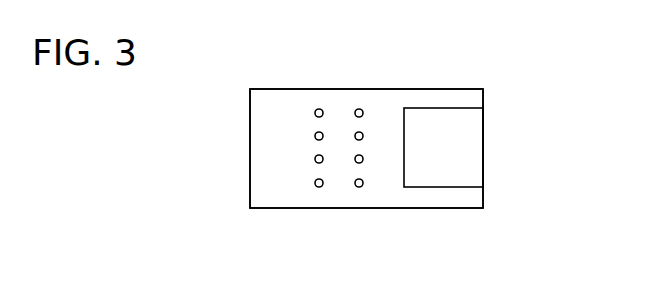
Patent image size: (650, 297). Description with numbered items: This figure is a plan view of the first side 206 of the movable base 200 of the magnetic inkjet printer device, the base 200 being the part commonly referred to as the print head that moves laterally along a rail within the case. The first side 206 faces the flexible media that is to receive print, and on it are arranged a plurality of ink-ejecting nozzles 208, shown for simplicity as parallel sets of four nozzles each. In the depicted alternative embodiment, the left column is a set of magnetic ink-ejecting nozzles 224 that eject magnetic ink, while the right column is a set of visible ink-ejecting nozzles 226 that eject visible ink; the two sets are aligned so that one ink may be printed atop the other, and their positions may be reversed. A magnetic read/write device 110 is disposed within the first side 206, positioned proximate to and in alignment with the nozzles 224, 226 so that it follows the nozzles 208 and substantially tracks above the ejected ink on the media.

The movable base 200 is at (233, 120).
The first side 206 is at (283, 172).
The magnetic read/write device 110 is at (450, 142).
The magnetic ink-ejecting nozzle 224 is at (335, 105).
The visible ink-ejecting nozzle 226 is at (374, 105).
The ink-ejecting nozzle 208 is at (360, 187).